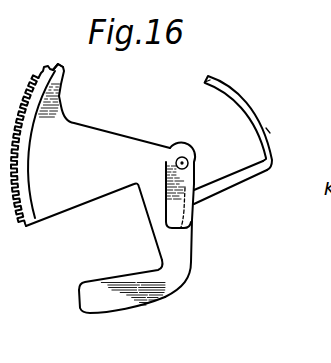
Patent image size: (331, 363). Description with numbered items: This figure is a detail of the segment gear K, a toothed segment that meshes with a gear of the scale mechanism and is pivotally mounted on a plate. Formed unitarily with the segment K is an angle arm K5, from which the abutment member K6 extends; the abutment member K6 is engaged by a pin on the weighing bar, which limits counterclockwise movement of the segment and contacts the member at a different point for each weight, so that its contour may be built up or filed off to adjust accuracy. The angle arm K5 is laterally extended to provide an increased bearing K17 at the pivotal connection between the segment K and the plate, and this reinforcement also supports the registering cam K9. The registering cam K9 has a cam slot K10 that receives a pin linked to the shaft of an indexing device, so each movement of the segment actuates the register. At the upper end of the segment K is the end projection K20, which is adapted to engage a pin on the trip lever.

The segment gear K is at (108, 143).
The end projection K20 is at (58, 64).
The angle arm K5 is at (180, 262).
The abutment member K6 is at (145, 305).
The increased bearing K17 is at (196, 178).
The registering cam K9 is at (273, 152).
The cam slot K10 is at (268, 130).